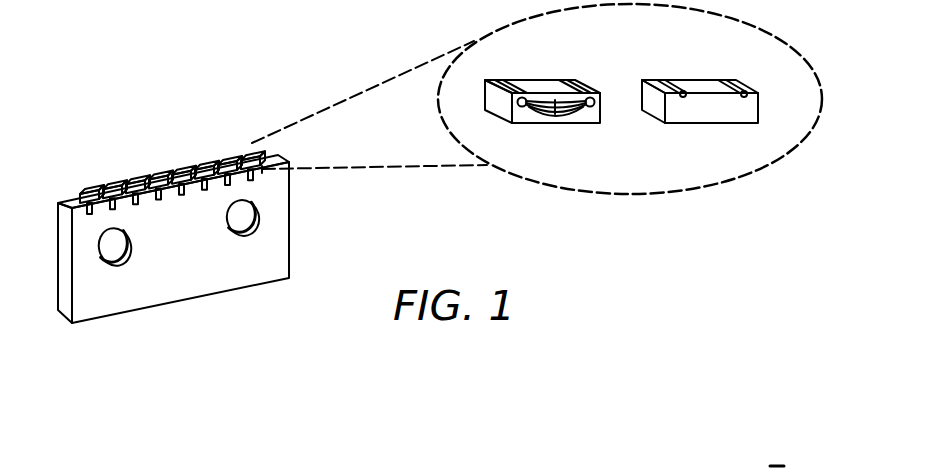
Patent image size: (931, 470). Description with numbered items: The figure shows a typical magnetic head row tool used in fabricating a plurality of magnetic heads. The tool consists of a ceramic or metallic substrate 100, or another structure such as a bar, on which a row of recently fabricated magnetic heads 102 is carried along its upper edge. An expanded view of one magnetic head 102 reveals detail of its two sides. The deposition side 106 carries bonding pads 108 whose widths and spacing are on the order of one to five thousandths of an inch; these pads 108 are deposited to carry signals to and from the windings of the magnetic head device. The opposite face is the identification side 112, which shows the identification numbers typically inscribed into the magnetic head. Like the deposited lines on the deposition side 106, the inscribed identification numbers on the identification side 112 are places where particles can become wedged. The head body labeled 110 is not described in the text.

The substrate 100 is at (173, 249).
The magnetic heads 102 is at (180, 167).
The deposition side 106 is at (548, 71).
The bonding pads 108 is at (570, 115).
The contact element housing with marking 110 is at (700, 76).
The identification side 112 is at (703, 132).